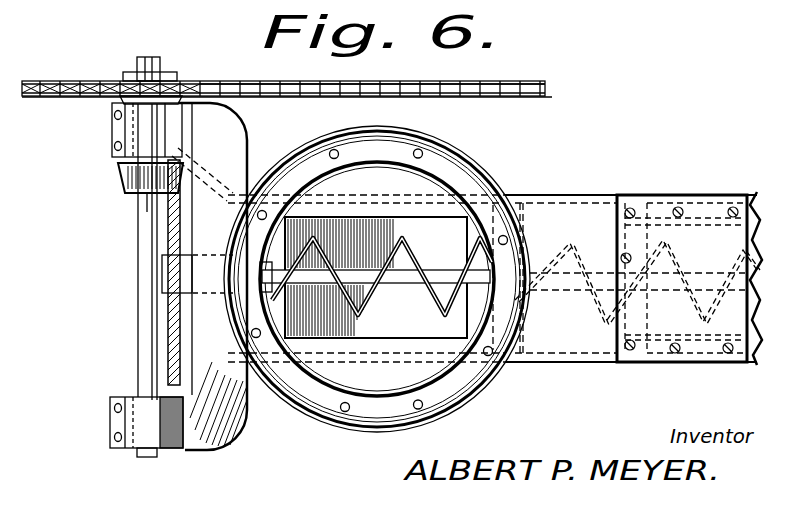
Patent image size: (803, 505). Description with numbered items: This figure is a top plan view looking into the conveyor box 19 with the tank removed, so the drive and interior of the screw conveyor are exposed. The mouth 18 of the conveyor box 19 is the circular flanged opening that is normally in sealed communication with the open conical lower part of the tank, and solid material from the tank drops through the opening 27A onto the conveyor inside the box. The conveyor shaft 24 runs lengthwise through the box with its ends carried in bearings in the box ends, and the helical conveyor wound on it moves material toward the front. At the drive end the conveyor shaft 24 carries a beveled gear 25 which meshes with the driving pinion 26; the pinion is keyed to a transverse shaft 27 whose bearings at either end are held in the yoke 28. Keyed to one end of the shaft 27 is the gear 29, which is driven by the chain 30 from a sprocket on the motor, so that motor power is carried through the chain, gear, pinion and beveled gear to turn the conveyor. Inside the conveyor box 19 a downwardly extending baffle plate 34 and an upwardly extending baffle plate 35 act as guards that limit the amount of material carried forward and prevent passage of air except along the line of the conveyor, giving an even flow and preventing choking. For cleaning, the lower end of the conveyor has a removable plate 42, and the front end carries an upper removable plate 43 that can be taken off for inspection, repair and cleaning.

The mouth 18 is at (448, 172).
The conveyor box 19 is at (552, 343).
The conveyor shaft 24 is at (380, 282).
The beveled gear 25 is at (167, 318).
The driving pinion 26 is at (120, 177).
The shaft 27 is at (153, 235).
The opening 27A is at (403, 338).
The yoke 28 is at (190, 437).
The gear 29 is at (80, 58).
The chain 30 is at (300, 75).
The downwardly extending baffle plate 34 is at (542, 198).
The upwardly extending baffle plate 35 is at (608, 364).
The removable plate 42 is at (322, 327).
The upper removable plate 43 is at (683, 237).